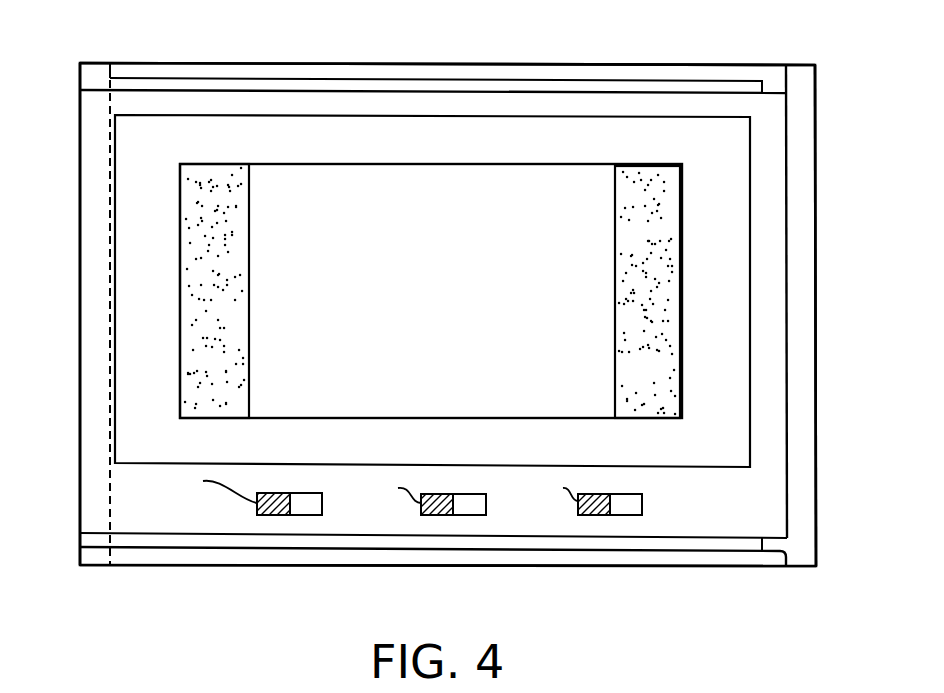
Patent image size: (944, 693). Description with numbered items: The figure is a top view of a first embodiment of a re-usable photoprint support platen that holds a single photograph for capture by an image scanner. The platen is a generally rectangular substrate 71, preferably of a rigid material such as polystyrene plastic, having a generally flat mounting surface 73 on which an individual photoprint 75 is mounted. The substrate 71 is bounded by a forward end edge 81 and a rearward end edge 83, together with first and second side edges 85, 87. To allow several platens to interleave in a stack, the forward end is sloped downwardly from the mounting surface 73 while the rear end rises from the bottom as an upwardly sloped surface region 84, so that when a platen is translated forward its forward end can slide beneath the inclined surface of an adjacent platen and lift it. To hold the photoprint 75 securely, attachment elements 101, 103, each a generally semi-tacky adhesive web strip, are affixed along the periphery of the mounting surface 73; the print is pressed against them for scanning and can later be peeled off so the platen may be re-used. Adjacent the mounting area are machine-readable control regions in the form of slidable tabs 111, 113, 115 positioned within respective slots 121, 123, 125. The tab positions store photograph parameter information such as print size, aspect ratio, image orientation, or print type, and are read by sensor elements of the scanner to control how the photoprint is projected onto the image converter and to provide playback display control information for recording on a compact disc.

The substrate 71 is at (822, 351).
The mounting surface 73 is at (773, 162).
The photoprint 75 is at (442, 217).
The forward end edge 81 is at (819, 491).
The rearward end edge 83 is at (80, 434).
The upwardly sloped surface region 84 is at (92, 500).
The first side edge 85 is at (400, 63).
The second side edge 87 is at (530, 568).
The attachment element 101 is at (240, 246).
The attachment element 103 is at (625, 297).
The slidable tab 111 is at (213, 489).
The slidable tab 113 is at (393, 490).
The slidable tab 115 is at (555, 490).
The slot 121 is at (322, 505).
The slot 123 is at (486, 506).
The slot 125 is at (642, 506).